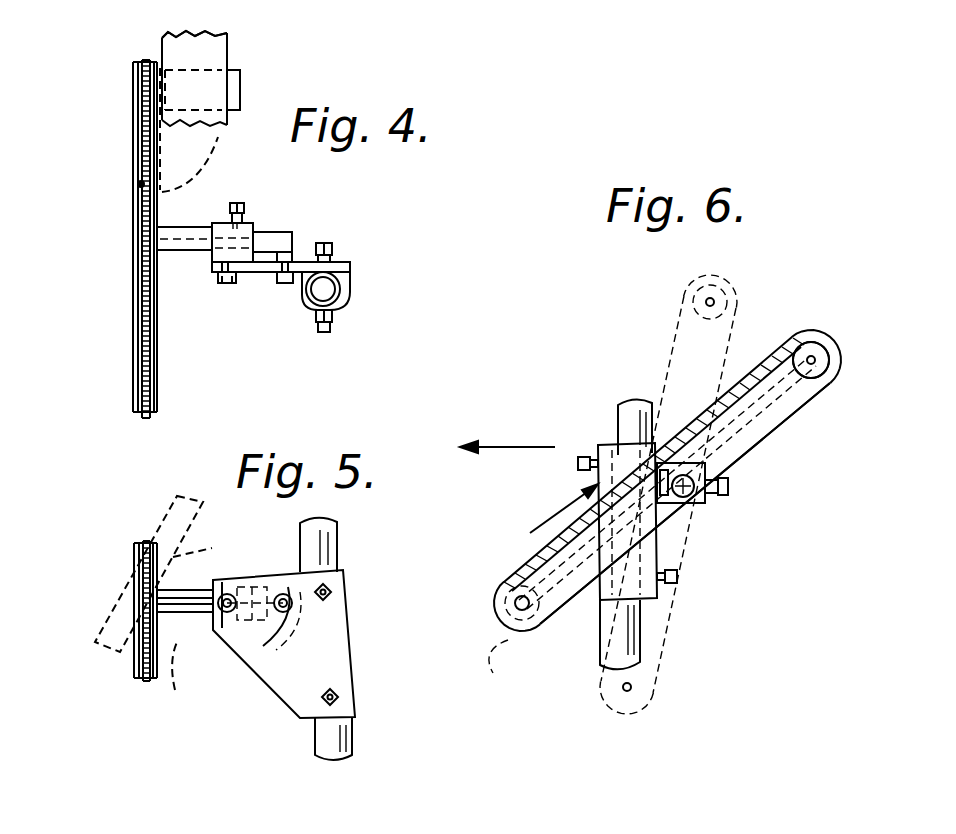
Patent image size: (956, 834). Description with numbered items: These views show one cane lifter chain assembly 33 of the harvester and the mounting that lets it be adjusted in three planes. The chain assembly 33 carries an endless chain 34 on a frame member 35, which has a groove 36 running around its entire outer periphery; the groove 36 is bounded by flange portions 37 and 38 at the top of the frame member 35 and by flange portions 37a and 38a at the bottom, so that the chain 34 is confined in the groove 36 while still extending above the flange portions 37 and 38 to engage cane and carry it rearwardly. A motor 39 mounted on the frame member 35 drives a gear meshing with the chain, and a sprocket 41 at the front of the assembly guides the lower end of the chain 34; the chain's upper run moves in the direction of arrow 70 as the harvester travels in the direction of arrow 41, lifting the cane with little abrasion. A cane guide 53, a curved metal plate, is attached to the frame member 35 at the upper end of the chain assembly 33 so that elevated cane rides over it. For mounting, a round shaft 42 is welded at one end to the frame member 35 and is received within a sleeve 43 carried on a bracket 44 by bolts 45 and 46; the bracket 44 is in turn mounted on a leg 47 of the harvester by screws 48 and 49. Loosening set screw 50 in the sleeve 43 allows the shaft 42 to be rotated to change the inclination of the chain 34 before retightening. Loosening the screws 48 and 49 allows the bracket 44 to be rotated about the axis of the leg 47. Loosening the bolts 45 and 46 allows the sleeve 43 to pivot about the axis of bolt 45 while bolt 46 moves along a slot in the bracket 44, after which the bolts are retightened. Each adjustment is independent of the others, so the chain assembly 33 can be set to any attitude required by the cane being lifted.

In FIG. 4, the endless chain assembly 33 is at (134, 351).
In FIG. 5, the endless chain assembly 33 is at (134, 628).
In FIG. 6, the endless chain assembly 33 is at (503, 617).
In FIG. 4, the endless chain 34 is at (148, 376).
In FIG. 6, the endless chain 34 is at (533, 549).
In FIG. 4, the frame member 35 is at (158, 336).
In FIG. 6, the frame member 35 is at (548, 628).
In FIG. 4, the groove 36 is at (140, 186).
In FIG. 4, the flange portion 37 is at (136, 152).
In FIG. 6, the flange portion 37a is at (780, 433).
In FIG. 4, the flange portion 38 is at (157, 212).
In FIG. 6, the flange portion 38a is at (748, 456).
In FIG. 4, the motor 39 is at (240, 82).
In FIG. 6, the motor 39 is at (837, 347).
In FIG. 6, the sprocket 41 is at (538, 428).
In FIG. 4, the round shaft 42 is at (265, 232).
In FIG. 5, the round shaft 42 is at (158, 612).
In FIG. 6, the round shaft 42 is at (690, 505).
In FIG. 4, the sleeve 43 is at (262, 232).
In FIG. 4, the bracket 44 is at (256, 273).
In FIG. 5, the bracket 44 is at (338, 641).
In FIG. 6, the bracket 44 is at (660, 548).
In FIG. 4, the bolt 45 is at (225, 285).
In FIG. 5, the bolt 45 is at (222, 585).
In FIG. 4, the bolt 46 is at (286, 286).
In FIG. 5, the bolt 46 is at (290, 590).
In FIG. 4, the leg 47 is at (352, 269).
In FIG. 5, the leg 47 is at (325, 540).
In FIG. 6, the leg 47 is at (613, 403).
In FIG. 4, the screw 48 is at (333, 330).
In FIG. 5, the screw 48 is at (333, 590).
In FIG. 6, the screw 48 is at (583, 457).
In FIG. 4, the screw 49 is at (334, 248).
In FIG. 5, the screw 49 is at (345, 697).
In FIG. 6, the screw 49 is at (678, 577).
In FIG. 4, the set screw 50 is at (238, 204).
In FIG. 6, the set screw 50 is at (714, 500).
In FIG. 4, the cane guide 53 is at (186, 33).
In FIG. 6, the belt direction arrow 70 is at (556, 512).